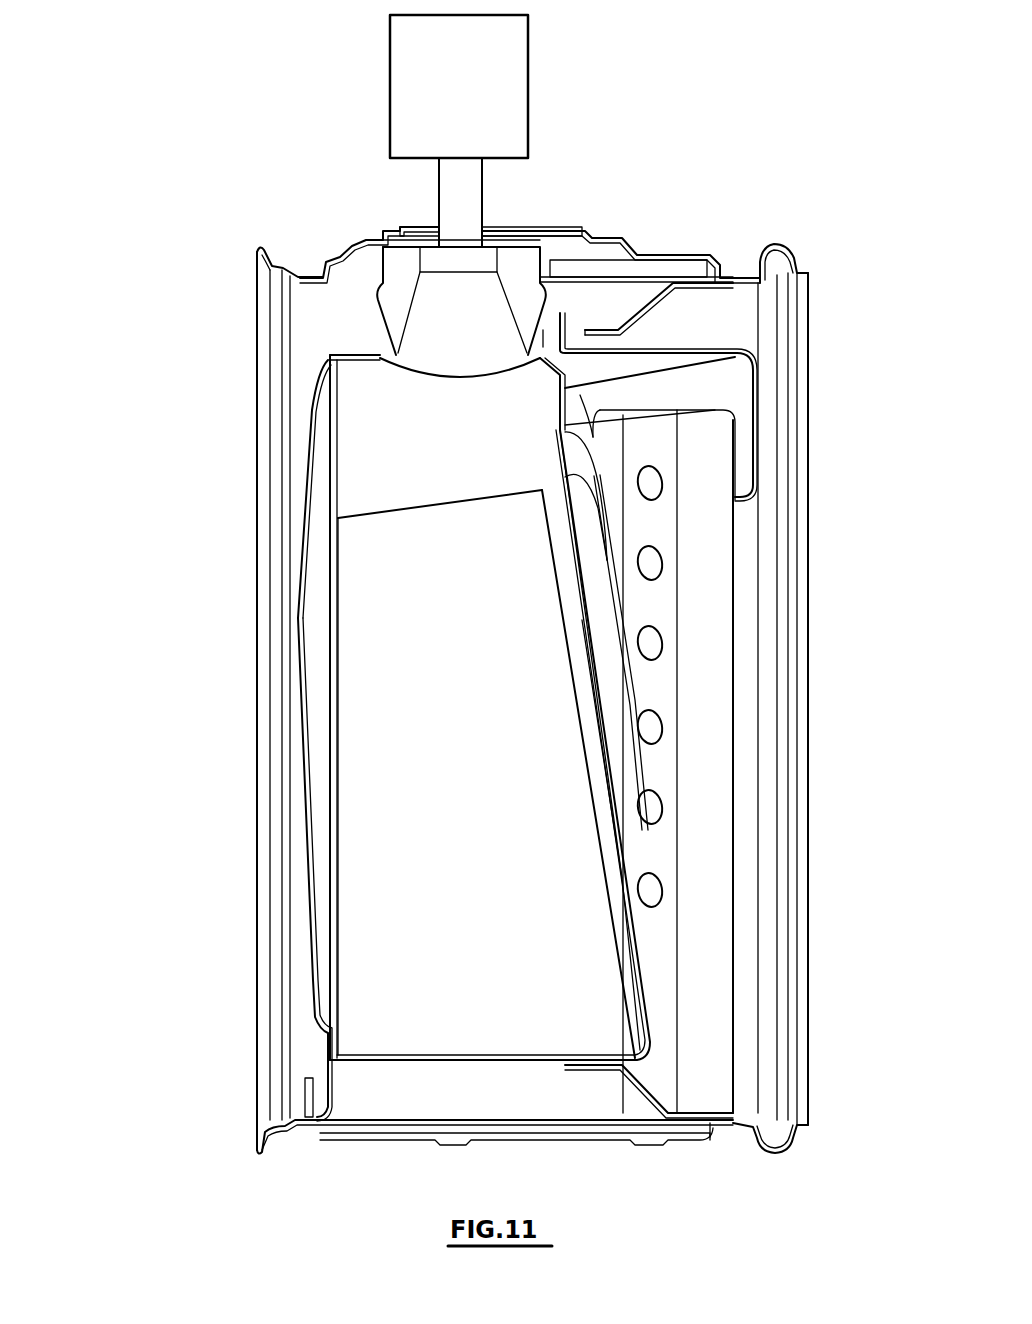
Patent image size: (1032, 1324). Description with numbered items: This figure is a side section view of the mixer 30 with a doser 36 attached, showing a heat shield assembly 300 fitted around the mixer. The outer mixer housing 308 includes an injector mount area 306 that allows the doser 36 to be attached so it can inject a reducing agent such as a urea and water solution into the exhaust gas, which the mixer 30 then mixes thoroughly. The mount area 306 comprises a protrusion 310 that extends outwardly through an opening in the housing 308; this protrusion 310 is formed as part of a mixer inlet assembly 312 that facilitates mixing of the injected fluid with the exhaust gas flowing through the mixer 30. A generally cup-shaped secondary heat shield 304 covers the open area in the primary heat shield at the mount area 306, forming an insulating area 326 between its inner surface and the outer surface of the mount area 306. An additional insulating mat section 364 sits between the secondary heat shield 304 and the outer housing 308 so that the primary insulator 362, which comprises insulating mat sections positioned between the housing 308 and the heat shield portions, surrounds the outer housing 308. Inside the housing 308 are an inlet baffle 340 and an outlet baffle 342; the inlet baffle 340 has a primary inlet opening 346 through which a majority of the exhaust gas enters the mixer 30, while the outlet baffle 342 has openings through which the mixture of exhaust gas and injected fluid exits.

The mixer 30 is at (150, 225).
The doser 36 is at (459, 131).
The heat shield assembly 300 is at (745, 242).
The secondary heat shield 304 is at (372, 236).
The injector mount area 306 is at (608, 187).
The outer mixer housing 308 is at (795, 680).
The protrusion 310 is at (405, 230).
The mixer inlet assembly 312 is at (320, 262).
The insulating area 326 is at (590, 246).
The inlet baffle 340 is at (315, 1090).
The outlet baffle 342 is at (715, 385).
The primary inlet opening 346 is at (712, 834).
The primary insulator 362 is at (695, 1130).
The additional insulating mat section 364 is at (697, 270).